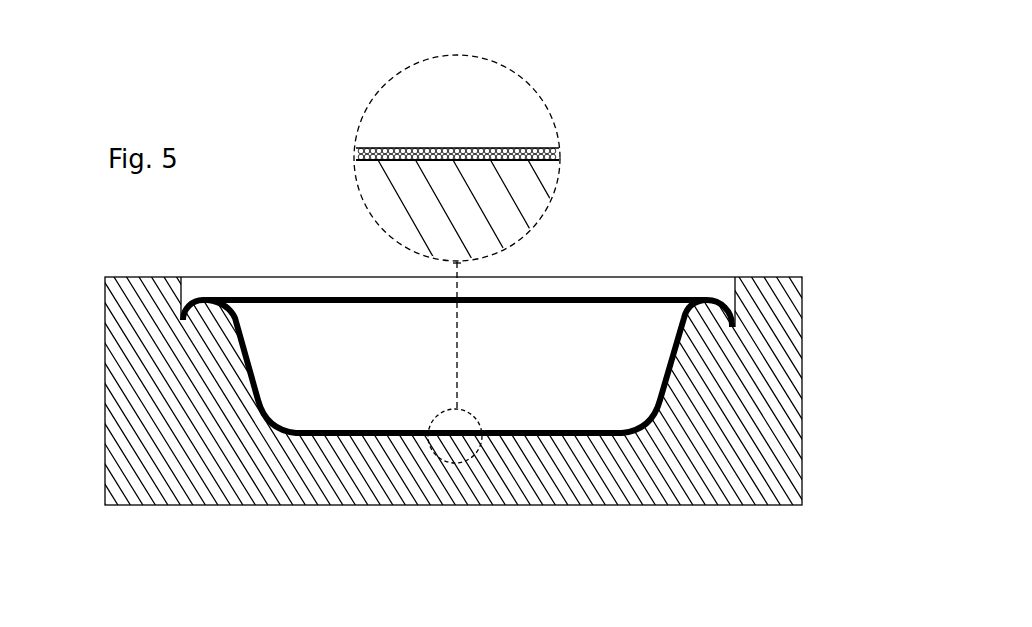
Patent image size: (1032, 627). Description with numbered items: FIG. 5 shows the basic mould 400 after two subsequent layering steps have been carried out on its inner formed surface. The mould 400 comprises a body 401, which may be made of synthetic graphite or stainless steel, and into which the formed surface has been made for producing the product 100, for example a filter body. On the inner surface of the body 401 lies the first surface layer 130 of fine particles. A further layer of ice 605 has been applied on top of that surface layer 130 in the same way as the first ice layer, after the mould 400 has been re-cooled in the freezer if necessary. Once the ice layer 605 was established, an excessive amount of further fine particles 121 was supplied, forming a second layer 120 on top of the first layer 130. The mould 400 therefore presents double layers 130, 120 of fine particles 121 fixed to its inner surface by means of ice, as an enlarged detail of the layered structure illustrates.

The product 100 is at (602, 332).
The second layer 120 is at (498, 150).
The fine particles 121 is at (558, 150).
The surface layer 130 is at (357, 156).
The basic mould half 400 is at (79, 507).
The body 401 is at (715, 480).
The further layer of ice 605 is at (417, 148).